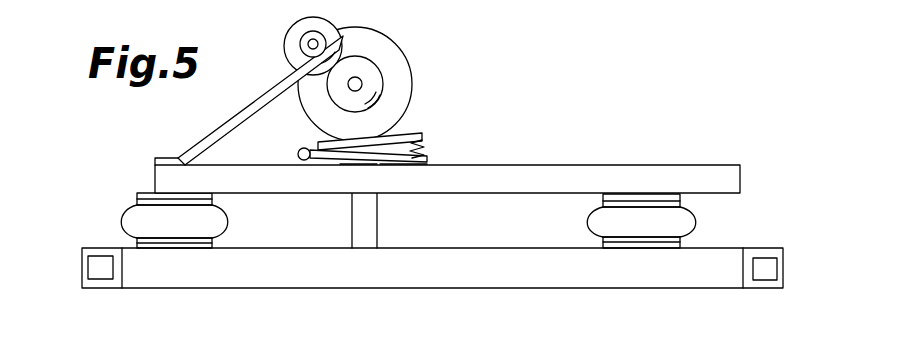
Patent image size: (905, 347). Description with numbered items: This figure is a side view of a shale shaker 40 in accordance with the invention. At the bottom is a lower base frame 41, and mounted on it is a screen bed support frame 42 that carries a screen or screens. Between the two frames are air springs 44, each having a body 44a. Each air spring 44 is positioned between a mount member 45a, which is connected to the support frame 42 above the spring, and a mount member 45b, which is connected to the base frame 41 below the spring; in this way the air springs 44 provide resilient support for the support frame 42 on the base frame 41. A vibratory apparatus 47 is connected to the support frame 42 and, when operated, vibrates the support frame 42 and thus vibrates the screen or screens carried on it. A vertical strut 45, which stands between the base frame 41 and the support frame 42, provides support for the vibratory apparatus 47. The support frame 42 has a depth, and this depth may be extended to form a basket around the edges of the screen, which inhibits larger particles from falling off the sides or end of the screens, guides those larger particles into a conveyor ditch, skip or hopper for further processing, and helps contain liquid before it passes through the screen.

The shale shaker 40 is at (662, 148).
The lower base frame 41 is at (313, 275).
The screen bed support frame 42 is at (508, 166).
The air spring 44 is at (127, 218).
The body 44a is at (190, 218).
The vertical strut 45 is at (363, 227).
The mount member 45a is at (137, 199).
The mount member 45b is at (125, 248).
The vibratory apparatus 47 is at (405, 62).